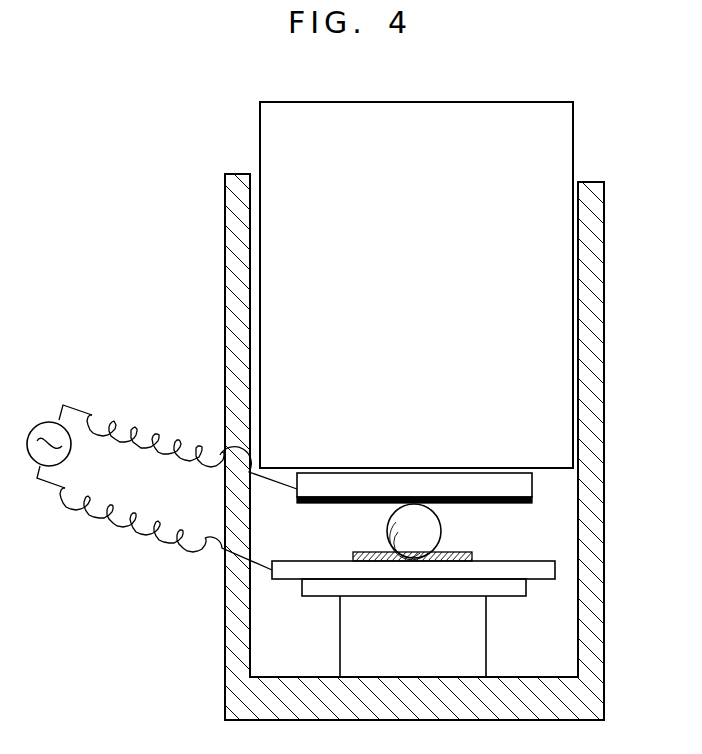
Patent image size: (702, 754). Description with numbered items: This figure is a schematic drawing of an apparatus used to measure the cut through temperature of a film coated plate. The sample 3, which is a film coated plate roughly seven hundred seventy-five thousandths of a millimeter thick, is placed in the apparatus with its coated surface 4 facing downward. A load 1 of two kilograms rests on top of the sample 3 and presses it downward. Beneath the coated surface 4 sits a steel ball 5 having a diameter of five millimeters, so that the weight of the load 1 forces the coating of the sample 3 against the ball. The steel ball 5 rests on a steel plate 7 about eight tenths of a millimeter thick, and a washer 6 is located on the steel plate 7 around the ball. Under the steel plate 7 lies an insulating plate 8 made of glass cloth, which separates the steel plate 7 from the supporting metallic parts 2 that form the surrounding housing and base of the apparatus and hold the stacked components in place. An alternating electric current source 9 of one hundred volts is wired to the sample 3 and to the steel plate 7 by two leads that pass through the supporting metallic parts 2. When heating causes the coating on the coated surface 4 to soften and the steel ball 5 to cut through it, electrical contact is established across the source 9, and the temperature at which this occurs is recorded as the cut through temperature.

The load 1 is at (560, 140).
The supporting metallic parts 2 is at (596, 282).
The sample 3 is at (525, 483).
The coated surface 4 is at (531, 503).
The steel ball 5 is at (436, 529).
The washer 6 is at (470, 553).
The steel plate 7 is at (551, 545).
The insulating plate 8 is at (514, 592).
The alternating electric current source 9 is at (47, 422).